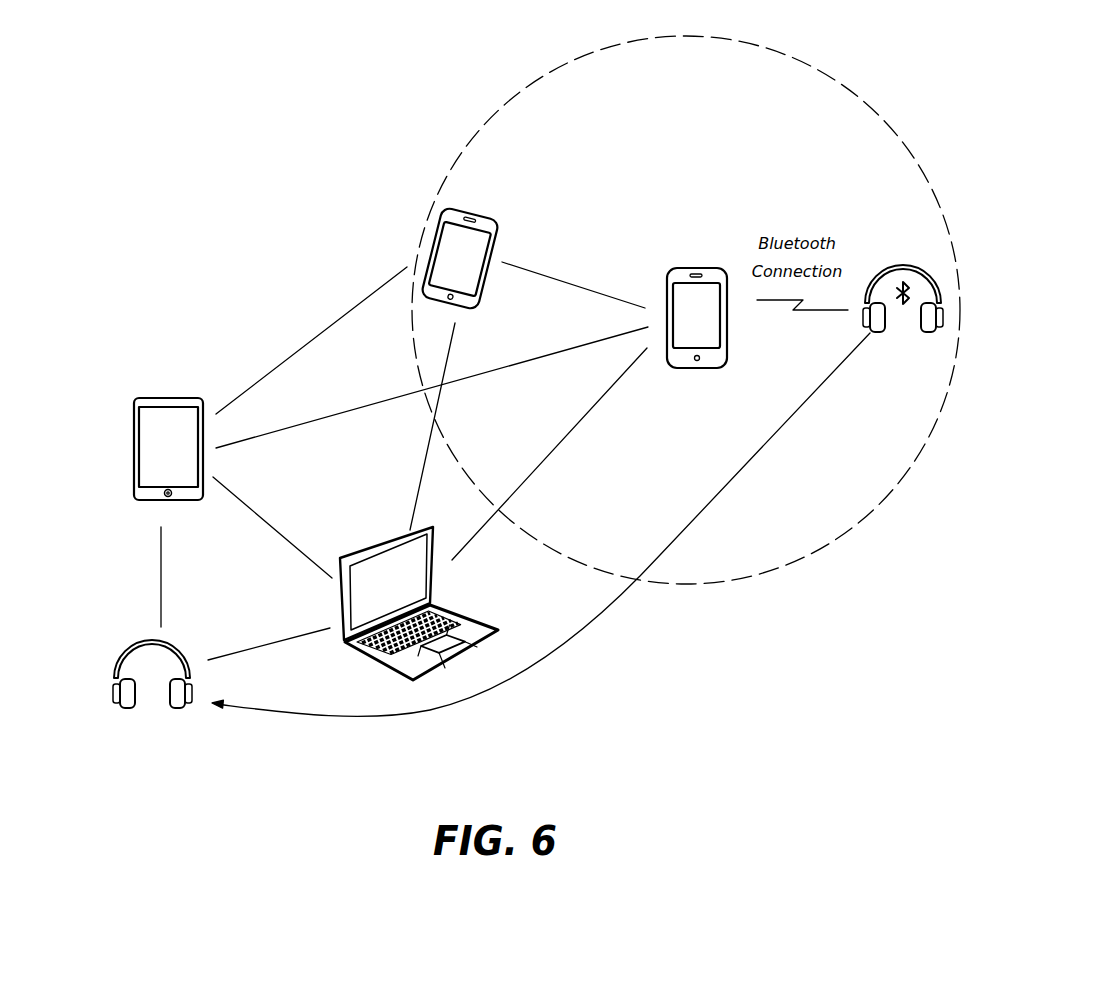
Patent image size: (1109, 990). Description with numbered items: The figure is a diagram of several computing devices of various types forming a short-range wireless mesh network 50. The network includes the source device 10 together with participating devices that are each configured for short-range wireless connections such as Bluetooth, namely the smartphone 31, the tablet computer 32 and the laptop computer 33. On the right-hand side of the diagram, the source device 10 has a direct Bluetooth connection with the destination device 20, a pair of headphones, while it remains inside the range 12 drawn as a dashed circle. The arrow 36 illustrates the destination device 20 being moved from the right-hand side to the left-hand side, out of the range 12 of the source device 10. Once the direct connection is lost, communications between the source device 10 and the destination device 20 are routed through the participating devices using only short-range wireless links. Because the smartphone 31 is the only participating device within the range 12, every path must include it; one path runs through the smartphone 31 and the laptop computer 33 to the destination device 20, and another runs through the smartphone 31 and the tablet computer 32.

The source device 10 is at (683, 268).
The range 12 is at (830, 72).
The destination device 20 is at (895, 266).
The smartphone 31 is at (472, 204).
The tablet computer 32 is at (168, 398).
The laptop computer 33 is at (381, 541).
The arrow 36 is at (360, 714).
The short-range wireless mesh network 50 is at (347, 205).